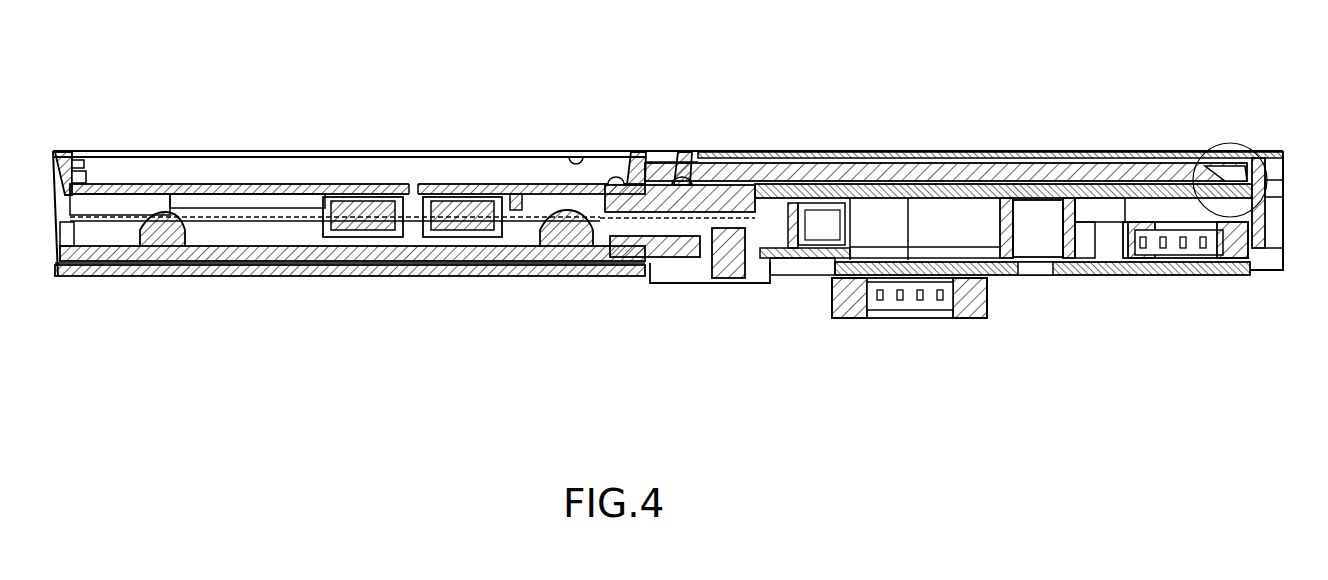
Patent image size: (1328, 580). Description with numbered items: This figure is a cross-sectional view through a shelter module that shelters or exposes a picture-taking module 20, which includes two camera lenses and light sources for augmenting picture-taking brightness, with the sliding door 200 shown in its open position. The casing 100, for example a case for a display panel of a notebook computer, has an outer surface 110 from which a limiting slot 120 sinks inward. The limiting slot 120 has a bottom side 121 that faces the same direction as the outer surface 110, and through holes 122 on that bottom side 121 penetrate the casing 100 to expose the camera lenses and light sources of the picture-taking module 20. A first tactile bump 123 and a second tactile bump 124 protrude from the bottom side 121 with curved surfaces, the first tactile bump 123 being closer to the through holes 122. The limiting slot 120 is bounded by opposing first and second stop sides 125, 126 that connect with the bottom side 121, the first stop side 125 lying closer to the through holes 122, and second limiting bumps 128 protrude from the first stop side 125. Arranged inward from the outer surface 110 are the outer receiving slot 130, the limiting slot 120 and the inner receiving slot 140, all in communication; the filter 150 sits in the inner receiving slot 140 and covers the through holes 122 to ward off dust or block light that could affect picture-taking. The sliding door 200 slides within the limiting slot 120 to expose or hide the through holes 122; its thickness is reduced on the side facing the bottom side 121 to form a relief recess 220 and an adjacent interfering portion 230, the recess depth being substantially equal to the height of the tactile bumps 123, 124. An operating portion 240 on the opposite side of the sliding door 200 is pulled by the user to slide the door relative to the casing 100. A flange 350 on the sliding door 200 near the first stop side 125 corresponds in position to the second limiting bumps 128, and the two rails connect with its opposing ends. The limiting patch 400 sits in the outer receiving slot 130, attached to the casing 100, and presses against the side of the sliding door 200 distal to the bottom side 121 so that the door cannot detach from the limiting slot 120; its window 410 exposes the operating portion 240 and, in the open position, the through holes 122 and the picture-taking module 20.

The picture-taking module 20 is at (372, 222).
The casing 100 is at (678, 200).
The outer surface 110 is at (1277, 146).
The limiting slot 120 is at (415, 168).
The bottom side 121 is at (925, 178).
The through holes 122 is at (412, 192).
The first tactile bump 123 is at (725, 160).
The second tactile bump 124 is at (1242, 167).
The first stop side 125 is at (77, 177).
The second stop side 126 is at (1210, 183).
The second limiting bumps 128 is at (78, 163).
The outer receiving slot 130 is at (1257, 150).
The inner receiving slot 140 is at (645, 170).
The filter 150 is at (195, 184).
The sliding door 200 is at (847, 172).
The relief recess 220 is at (1153, 188).
The interfering portion 230 is at (1236, 253).
The operating portion 240 is at (636, 150).
The flange 350 is at (613, 176).
The limiting patch 400 is at (1075, 152).
The window 410 is at (247, 155).